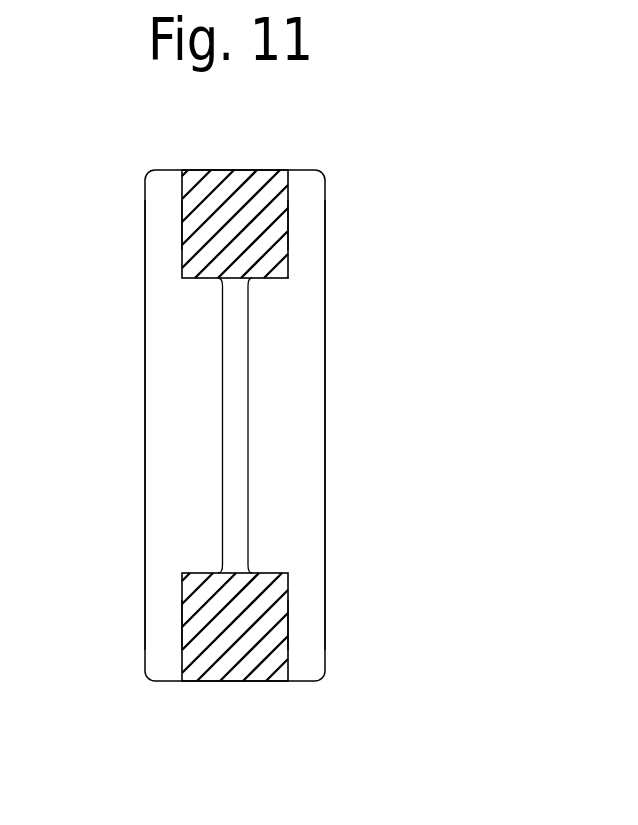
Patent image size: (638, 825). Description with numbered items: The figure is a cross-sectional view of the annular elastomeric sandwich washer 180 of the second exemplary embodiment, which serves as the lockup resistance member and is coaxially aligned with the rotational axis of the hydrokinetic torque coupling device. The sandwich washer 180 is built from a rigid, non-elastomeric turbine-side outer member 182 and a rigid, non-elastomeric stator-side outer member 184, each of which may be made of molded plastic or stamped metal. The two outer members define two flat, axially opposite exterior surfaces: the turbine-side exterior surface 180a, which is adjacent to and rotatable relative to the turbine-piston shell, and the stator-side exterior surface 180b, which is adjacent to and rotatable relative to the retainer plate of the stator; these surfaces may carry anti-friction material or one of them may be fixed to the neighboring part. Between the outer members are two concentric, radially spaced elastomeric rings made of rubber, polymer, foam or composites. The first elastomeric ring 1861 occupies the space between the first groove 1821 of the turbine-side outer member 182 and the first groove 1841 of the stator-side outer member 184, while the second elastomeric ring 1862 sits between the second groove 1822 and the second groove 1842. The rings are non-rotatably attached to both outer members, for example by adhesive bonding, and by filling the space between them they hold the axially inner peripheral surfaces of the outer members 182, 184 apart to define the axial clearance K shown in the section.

The annular elastomeric sandwich washer 180 is at (390, 279).
The turbine-side exterior surface 180a is at (325, 503).
The stator-side exterior surface 180b is at (145, 503).
The turbine-side outer member 182 is at (303, 360).
The stator-side outer member 184 is at (165, 360).
The first groove of turbine-side outer member 1821 is at (273, 193).
The first groove of stator-side outer member 1841 is at (197, 182).
The first elastomeric ring 1861 is at (240, 188).
The second groove of turbine-side outer member 1822 is at (273, 657).
The second groove of stator-side outer member 1842 is at (188, 662).
The second elastomeric ring 1862 is at (238, 653).
The axial clearance K is at (179, 431).